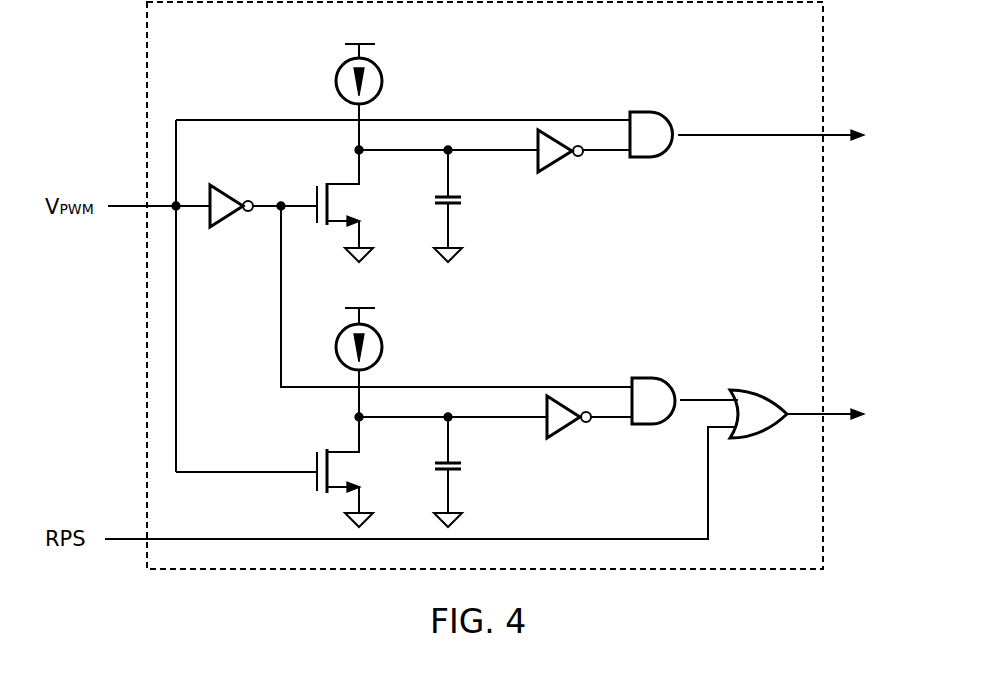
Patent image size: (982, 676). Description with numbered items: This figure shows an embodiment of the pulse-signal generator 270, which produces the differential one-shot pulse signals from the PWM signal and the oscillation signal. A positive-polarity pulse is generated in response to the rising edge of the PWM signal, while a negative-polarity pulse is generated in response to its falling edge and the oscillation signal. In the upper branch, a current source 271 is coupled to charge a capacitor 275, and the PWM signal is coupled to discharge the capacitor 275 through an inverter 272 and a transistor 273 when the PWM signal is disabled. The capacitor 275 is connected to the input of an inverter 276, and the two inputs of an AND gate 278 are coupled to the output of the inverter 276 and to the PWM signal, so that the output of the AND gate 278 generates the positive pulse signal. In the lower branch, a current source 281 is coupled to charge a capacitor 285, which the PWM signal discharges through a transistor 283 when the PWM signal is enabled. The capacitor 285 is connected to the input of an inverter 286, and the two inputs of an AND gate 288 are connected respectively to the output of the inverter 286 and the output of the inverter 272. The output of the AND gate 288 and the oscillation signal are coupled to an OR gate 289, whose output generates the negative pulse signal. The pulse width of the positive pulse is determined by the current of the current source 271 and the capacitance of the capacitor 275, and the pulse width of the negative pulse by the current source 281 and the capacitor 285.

The pulse-signal generator 270 is at (823, 53).
The current source 271 is at (383, 80).
The inverter 272 is at (225, 223).
The transistor 273 is at (357, 200).
The capacitor 275 is at (465, 199).
The inverter 276 is at (557, 163).
The AND gate 278 is at (647, 160).
The current source 281 is at (383, 347).
The transistor 283 is at (357, 468).
The capacitor 285 is at (465, 466).
The inverter 286 is at (567, 432).
The AND gate 288 is at (650, 428).
The OR gate 289 is at (755, 440).